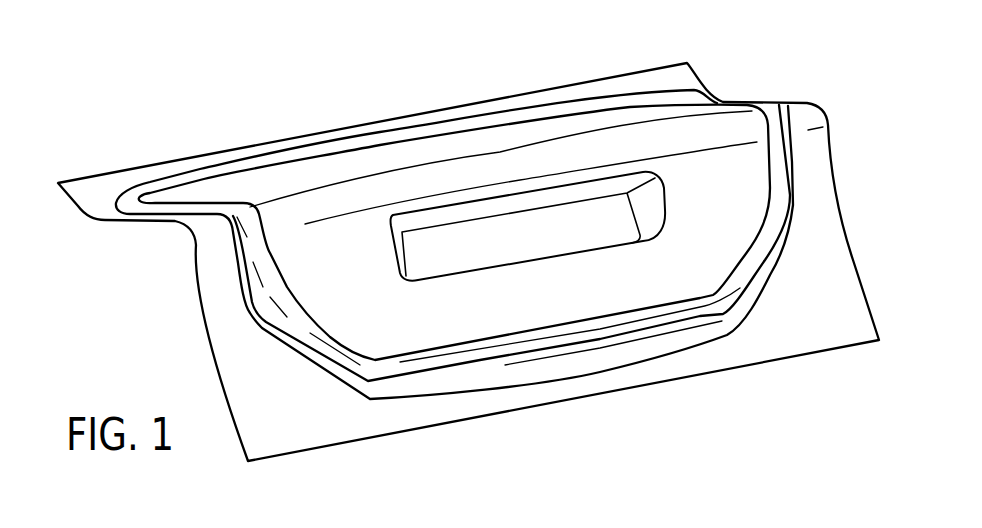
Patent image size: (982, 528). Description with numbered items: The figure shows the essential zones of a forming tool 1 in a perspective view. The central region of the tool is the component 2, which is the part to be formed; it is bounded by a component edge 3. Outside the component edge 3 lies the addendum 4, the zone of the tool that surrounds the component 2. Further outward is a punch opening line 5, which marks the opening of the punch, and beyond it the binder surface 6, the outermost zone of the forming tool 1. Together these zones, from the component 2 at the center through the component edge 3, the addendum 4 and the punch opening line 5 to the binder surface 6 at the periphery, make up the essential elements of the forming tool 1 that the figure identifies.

The forming tool 1 is at (237, 112).
The component 2 is at (535, 157).
The component edge 3 is at (349, 152).
The addendum 4 is at (540, 345).
The punch opening line 5 is at (650, 357).
The binder surface 6 is at (727, 347).